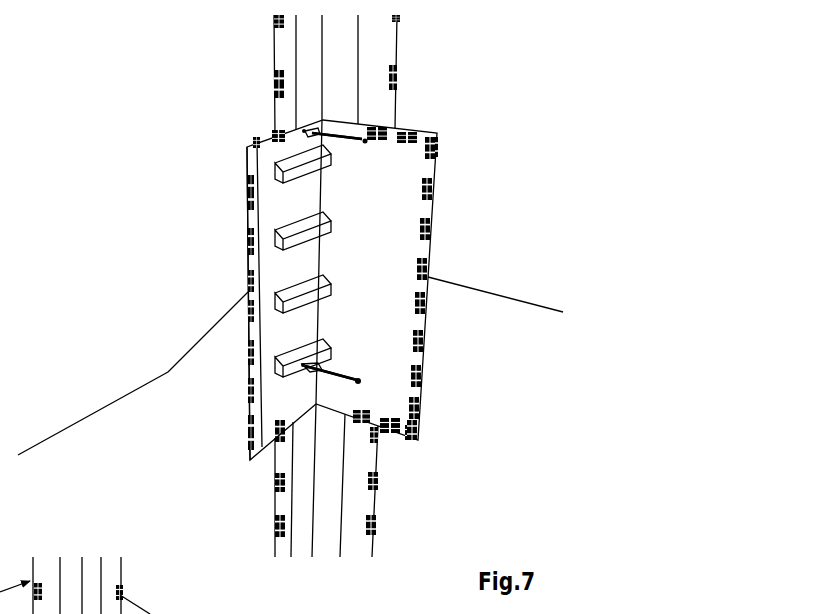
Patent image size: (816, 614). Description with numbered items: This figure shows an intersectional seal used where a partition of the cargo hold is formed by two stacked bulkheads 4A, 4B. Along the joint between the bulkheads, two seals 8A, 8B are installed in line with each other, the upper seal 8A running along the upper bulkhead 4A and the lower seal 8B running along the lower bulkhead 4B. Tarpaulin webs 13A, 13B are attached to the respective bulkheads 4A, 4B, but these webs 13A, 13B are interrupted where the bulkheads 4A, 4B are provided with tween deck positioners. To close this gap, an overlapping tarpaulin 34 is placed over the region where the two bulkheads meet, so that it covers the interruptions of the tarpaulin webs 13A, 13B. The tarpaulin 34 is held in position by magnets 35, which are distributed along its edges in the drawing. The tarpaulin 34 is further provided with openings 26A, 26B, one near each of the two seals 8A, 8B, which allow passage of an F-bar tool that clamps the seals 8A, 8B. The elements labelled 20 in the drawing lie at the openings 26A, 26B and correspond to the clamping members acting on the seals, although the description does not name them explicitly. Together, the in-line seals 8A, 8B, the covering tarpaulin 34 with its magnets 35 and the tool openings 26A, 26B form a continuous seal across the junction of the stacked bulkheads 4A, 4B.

The seal 8A is at (271, 40).
The tarpaulin web 13A is at (285, 58).
The opening 26A is at (318, 130).
The clamping rod 20 is at (358, 127).
The magnets 35 is at (248, 232).
The overlapping tarpaulin 34 is at (417, 247).
The opening 26B is at (317, 364).
The tarpaulin web 13B is at (280, 465).
The seal 8B is at (271, 500).
The bulkhead 4A is at (82, 374).
The bulkhead 4B is at (90, 486).